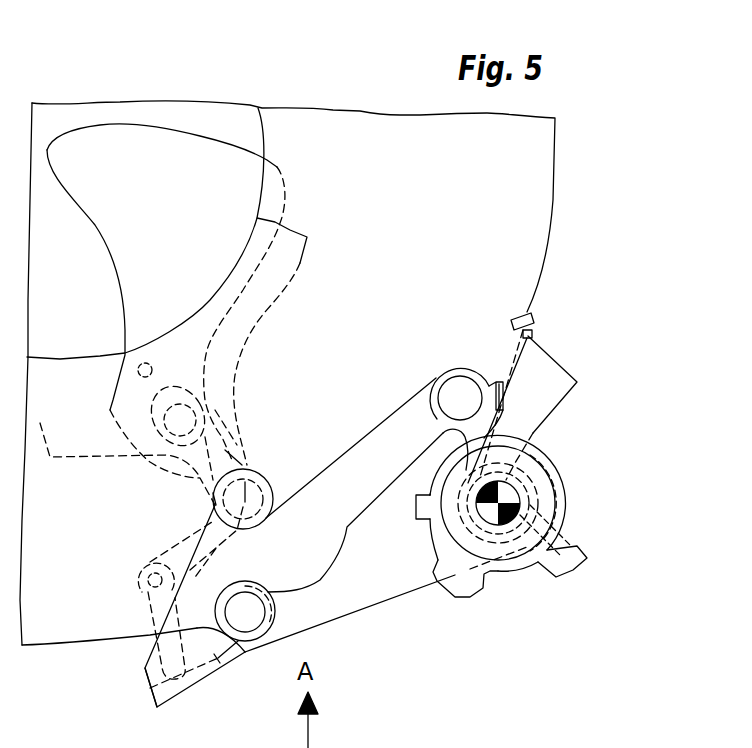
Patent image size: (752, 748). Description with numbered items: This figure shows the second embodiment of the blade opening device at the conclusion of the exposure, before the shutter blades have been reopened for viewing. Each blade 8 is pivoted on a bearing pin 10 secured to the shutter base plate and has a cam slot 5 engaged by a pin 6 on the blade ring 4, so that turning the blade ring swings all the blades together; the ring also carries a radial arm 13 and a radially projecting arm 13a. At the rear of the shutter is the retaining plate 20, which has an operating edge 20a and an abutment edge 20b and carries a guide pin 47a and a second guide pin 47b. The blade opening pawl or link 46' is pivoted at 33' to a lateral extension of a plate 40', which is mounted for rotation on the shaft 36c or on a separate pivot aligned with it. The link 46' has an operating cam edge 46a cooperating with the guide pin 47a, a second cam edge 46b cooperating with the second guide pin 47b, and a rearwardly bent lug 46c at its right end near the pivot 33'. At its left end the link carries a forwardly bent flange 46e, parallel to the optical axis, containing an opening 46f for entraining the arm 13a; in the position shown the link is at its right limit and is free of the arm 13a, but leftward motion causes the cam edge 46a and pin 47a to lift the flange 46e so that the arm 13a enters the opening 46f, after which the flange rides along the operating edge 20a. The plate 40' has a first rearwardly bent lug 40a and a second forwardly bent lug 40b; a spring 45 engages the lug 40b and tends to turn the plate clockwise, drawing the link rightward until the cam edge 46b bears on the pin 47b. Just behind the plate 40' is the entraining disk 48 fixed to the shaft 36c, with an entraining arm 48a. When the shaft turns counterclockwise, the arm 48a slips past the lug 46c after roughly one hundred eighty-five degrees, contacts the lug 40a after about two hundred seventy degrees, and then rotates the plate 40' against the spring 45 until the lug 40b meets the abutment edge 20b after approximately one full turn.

The retaining plate 20 is at (545, 230).
The operating edge 20a is at (70, 647).
The abutment edge 20b is at (562, 403).
The spring 45 is at (534, 323).
The blade 8 is at (112, 232).
The blade ring 4 is at (292, 263).
The cam slot 5 is at (175, 386).
The bearing pin 10 is at (140, 372).
The pin 6 is at (168, 414).
The radial arm 13 is at (233, 463).
The radially projecting arm 13a is at (147, 680).
The blade opening pawl 46' is at (324, 542).
The operating cam edge 46a is at (320, 580).
The second cam edge 46b is at (215, 498).
The rearwardly bent lug 46c is at (497, 381).
The forwardly bent flange 46e is at (157, 707).
The opening 46f is at (177, 693).
The guide pin 47a is at (249, 623).
The second guide pin 47b is at (257, 493).
The pivot 33' is at (459, 376).
The plate 40' is at (525, 503).
The first rearwardly bent lug 40a is at (417, 510).
The second forwardly bent lug 40b is at (567, 583).
The entraining disk 48 is at (547, 470).
The entraining arm 48a is at (460, 585).
The shaft 36c is at (517, 499).